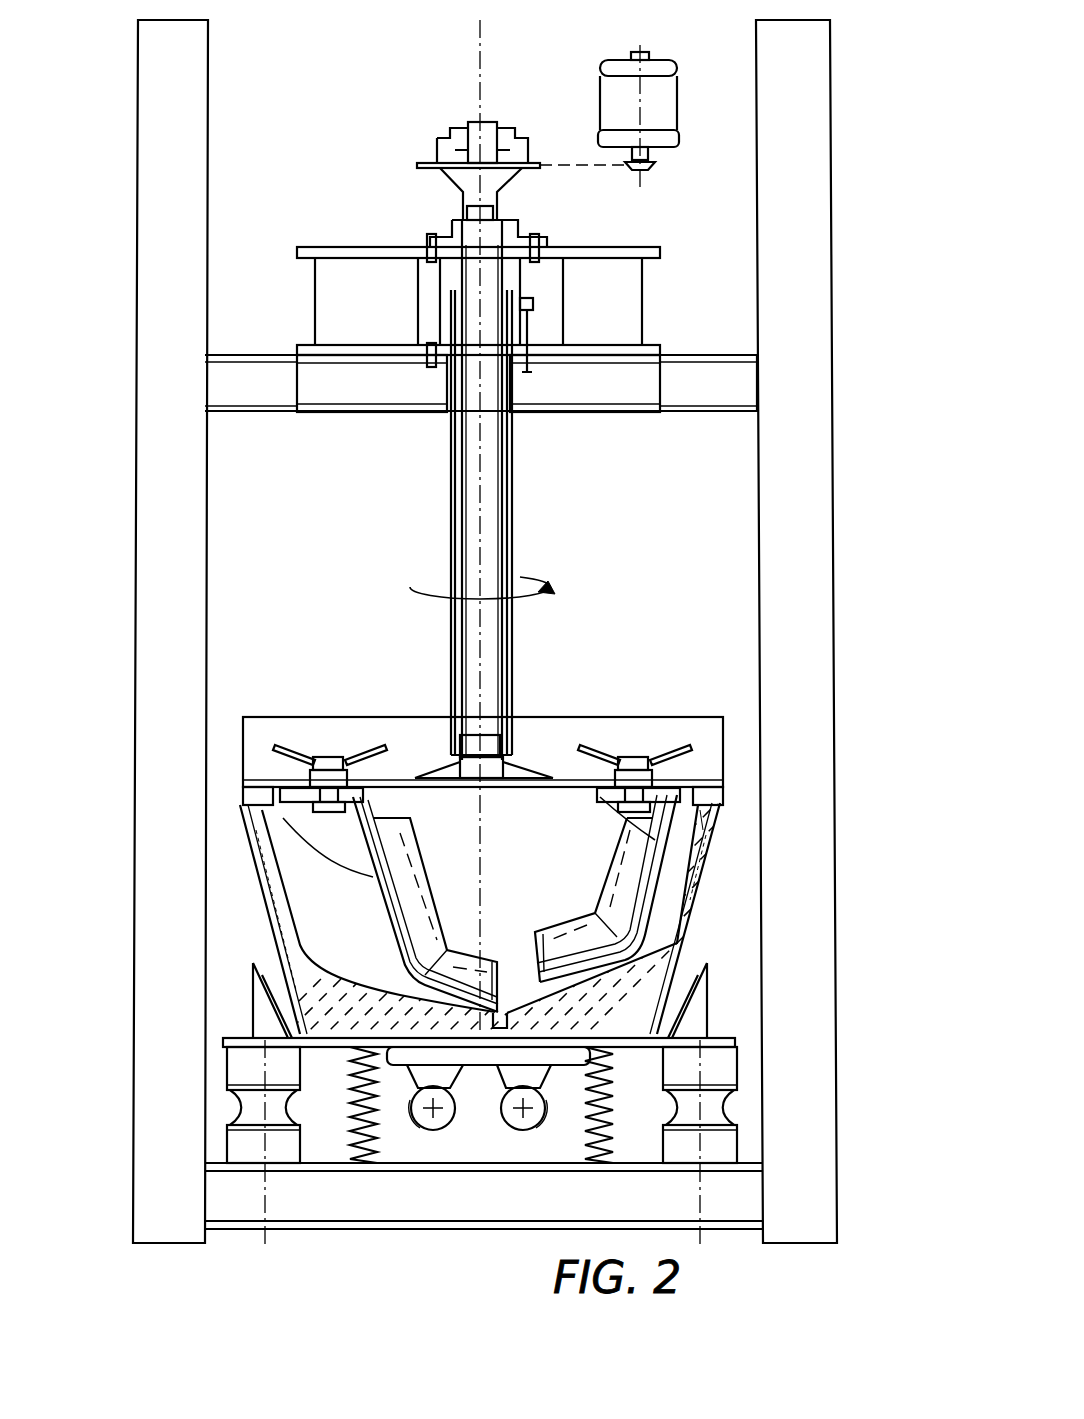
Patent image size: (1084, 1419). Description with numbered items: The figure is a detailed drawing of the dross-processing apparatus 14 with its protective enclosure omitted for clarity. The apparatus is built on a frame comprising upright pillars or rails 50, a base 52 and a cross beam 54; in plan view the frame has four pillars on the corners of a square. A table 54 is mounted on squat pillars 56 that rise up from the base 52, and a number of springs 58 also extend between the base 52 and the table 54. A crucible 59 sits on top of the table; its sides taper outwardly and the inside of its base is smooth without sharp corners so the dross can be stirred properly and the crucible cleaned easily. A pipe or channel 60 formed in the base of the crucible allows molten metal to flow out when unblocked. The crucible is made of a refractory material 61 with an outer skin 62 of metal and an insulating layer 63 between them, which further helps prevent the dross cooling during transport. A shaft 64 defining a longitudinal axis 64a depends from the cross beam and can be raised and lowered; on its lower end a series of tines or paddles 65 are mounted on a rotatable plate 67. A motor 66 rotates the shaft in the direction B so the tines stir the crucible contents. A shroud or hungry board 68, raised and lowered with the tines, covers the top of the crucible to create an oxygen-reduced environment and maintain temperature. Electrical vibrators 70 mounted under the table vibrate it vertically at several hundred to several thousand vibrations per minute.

The mixing apparatus 14 is at (327, 141).
The upright pillars or rails 50 is at (176, 459).
The base 52 is at (422, 1228).
The cross beam / table 54 is at (725, 372).
The squat pillars 56 is at (718, 1108).
The springs 58 is at (618, 1120).
The crucible 59 is at (255, 828).
The pipe or channel 60 is at (690, 940).
The refractory material 61 is at (268, 940).
The outer skin 62 is at (720, 805).
The insulating layer 63 is at (710, 864).
The shaft 64 is at (492, 513).
The longitudinal axis 64a is at (482, 470).
The tines or paddles 65 is at (605, 864).
The motor 66 is at (672, 104).
The rotatable plate 67 is at (396, 782).
The shroud or hungry board 68 is at (640, 717).
The electrical vibrators 70 is at (488, 1107).
The direction of rotation B is at (482, 602).